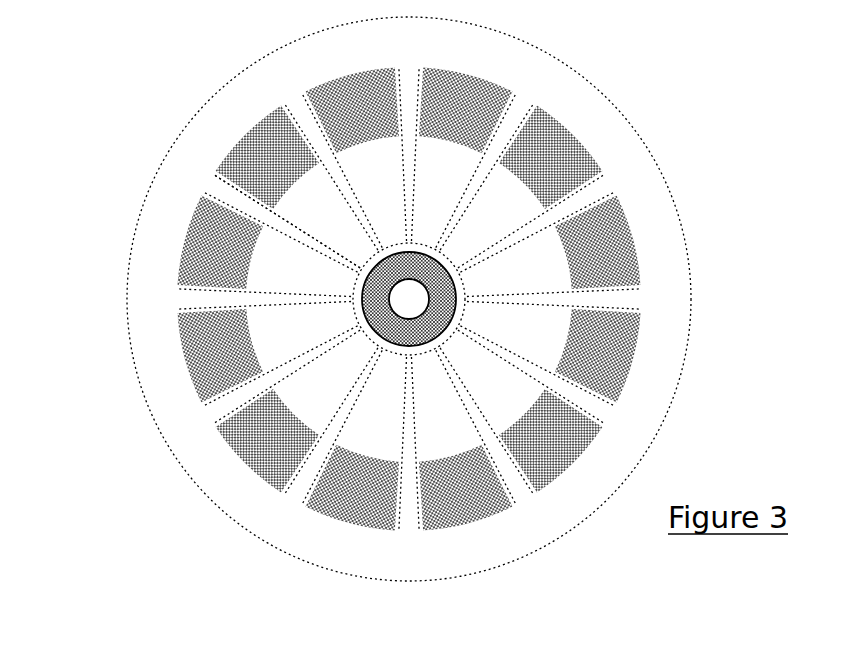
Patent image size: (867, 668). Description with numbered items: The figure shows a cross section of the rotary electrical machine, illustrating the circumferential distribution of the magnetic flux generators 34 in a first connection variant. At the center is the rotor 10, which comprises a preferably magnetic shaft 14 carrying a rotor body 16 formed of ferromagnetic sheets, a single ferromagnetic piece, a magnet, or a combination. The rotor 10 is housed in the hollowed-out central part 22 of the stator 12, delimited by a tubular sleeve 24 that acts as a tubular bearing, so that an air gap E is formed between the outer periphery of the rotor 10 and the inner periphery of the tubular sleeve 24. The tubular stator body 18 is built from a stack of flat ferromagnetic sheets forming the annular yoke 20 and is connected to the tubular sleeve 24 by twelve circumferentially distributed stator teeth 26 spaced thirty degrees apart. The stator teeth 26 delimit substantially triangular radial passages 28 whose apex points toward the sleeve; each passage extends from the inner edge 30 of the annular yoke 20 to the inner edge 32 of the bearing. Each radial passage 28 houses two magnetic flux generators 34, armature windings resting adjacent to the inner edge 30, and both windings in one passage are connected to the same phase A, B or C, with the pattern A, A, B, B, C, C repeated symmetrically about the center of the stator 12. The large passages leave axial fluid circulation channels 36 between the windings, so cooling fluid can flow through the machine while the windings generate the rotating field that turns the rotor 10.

The rotor 10 is at (416, 332).
The stator 12 is at (423, 332).
The shaft 14 is at (412, 291).
The rotor body 16 is at (417, 335).
The stator body 18 is at (672, 396).
The annular yoke 20 is at (407, 355).
The hollowed-out central part 22 is at (370, 260).
The tubular sleeve 24 is at (355, 287).
The stator teeth 26 is at (407, 200).
The radial passages 28 is at (267, 342).
The inner edge of annular yoke 30 is at (549, 124).
The inner edge of the bearing 32 is at (462, 273).
The magnetic flux generators 34 is at (380, 493).
The axial fluid circulation channels 36 is at (312, 417).
The air gap E is at (450, 311).